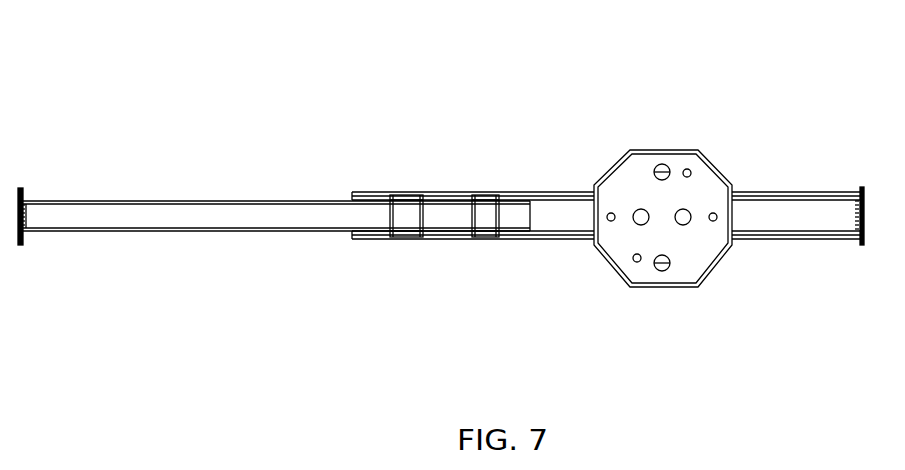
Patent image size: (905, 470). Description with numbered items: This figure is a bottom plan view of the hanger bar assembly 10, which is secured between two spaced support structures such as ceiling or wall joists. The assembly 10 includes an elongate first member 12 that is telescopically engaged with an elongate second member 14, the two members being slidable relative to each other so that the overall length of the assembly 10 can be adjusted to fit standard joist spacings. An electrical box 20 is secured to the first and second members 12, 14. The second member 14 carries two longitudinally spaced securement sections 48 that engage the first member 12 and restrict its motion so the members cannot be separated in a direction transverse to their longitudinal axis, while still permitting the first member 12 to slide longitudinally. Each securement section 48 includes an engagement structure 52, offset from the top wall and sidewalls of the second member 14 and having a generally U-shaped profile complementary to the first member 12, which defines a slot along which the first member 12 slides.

The hanger bar assembly 10 is at (540, 120).
The first member 12 is at (165, 232).
The second member 14 is at (824, 240).
The electrical box 20 is at (665, 150).
The securement section 48 is at (397, 240).
The engagement structure 52 is at (480, 220).